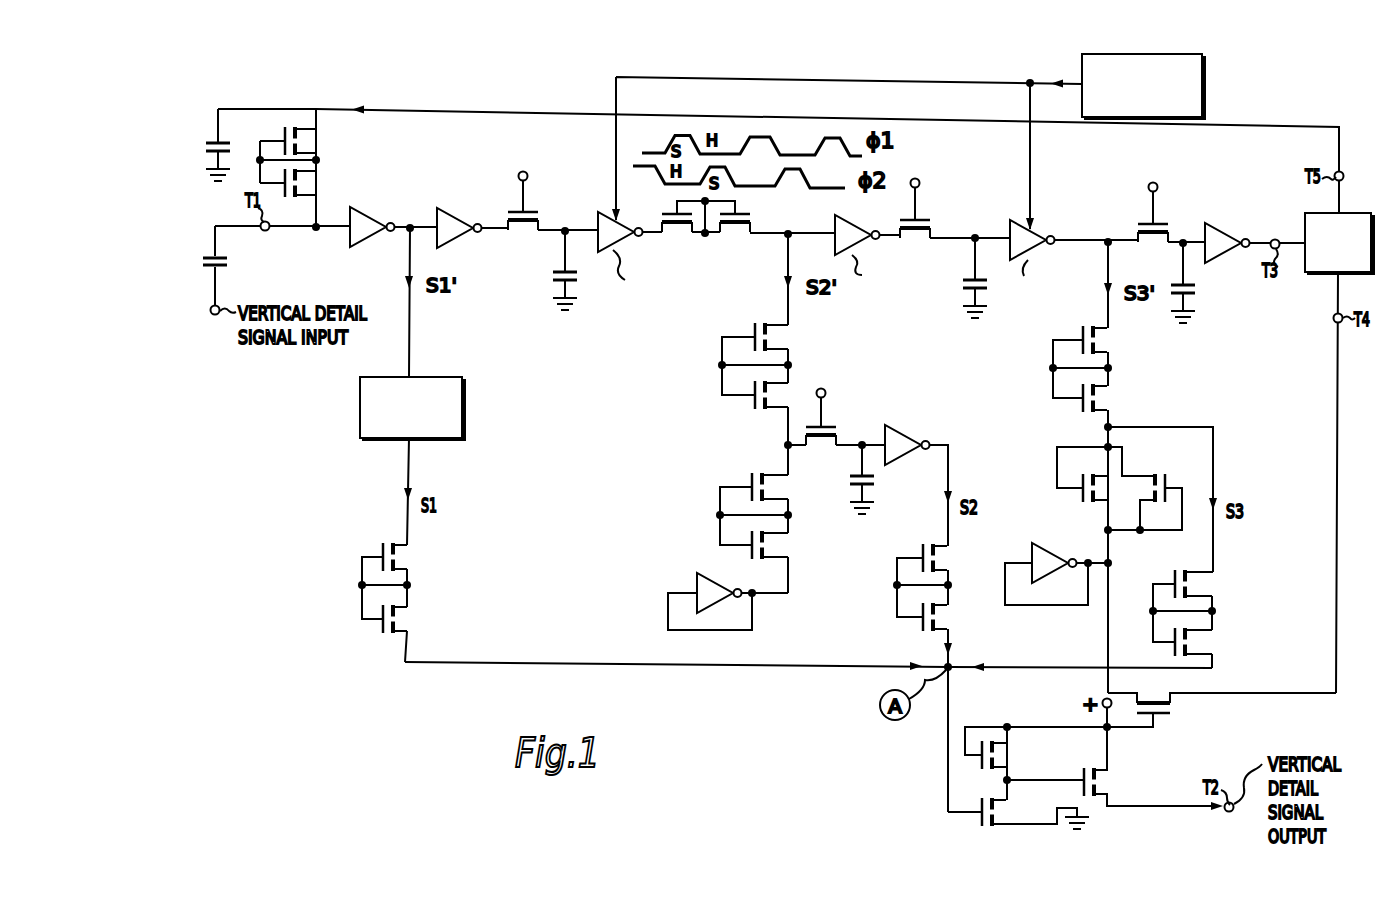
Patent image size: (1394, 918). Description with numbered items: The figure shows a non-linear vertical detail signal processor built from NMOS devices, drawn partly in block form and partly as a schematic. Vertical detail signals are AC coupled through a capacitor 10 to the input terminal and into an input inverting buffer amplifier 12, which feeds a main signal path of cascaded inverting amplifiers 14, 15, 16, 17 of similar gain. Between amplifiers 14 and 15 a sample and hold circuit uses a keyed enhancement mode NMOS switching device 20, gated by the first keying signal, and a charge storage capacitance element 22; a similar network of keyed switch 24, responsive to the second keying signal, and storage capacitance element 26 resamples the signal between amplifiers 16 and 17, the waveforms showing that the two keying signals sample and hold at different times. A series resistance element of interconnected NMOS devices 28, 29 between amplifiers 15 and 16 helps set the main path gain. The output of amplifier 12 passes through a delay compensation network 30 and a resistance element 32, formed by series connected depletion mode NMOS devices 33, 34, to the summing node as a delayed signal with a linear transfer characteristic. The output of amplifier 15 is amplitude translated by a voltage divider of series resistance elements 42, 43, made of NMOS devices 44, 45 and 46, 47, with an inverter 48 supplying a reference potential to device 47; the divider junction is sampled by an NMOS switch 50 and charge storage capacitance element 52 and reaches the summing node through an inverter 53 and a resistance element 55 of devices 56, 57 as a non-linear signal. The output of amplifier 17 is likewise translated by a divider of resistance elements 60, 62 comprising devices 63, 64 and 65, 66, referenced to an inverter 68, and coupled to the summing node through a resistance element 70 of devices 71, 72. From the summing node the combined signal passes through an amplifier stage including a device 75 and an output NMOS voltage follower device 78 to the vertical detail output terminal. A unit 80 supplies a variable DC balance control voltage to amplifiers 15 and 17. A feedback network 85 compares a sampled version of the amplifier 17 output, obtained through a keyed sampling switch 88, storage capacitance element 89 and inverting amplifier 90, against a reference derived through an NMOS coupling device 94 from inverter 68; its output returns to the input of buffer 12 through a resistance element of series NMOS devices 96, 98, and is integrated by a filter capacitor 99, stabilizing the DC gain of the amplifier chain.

The capacitor 10 is at (232, 264).
The input inverting buffer amplifier 12 is at (355, 208).
The inverting amplifier 14 is at (451, 207).
The inverting amplifier 15 is at (599, 211).
The inverting amplifier 16 is at (858, 216).
The inverting amplifier 17 is at (1004, 222).
The keyed enhancement mode NMOS switching device 20 is at (533, 255).
The charge storage capacitance element 22 is at (542, 285).
The keyed switch 24 is at (924, 268).
The storage capacitance element 26 is at (963, 290).
The NMOS device 28 is at (686, 263).
The NMOS device 29 is at (746, 263).
The delay compensation network 30 is at (360, 420).
The resistance element 32 is at (385, 590).
The depletion mode NMOS device 33 is at (436, 573).
The depletion mode NMOS device 34 is at (436, 635).
The series resistance element 42 is at (751, 368).
The series resistance element 43 is at (750, 519).
The NMOS device 44 is at (817, 352).
The NMOS device 45 is at (807, 411).
The NMOS device 46 is at (814, 502).
The NMOS device 47 is at (814, 562).
The inverter 48 is at (702, 588).
The NMOS switch 50 is at (827, 477).
The charge storage capacitance element 52 is at (874, 482).
The inverter 53 is at (908, 438).
The resistance element 55 is at (915, 589).
The NMOS device 56 is at (974, 570).
The NMOS device 57 is at (974, 633).
The series resistance element 60 is at (1079, 370).
The series resistance element 62 is at (1110, 488).
The NMOS device 63 is at (1136, 352).
The NMOS device 64 is at (1139, 412).
The NMOS device 65 is at (1125, 503).
The NMOS device 66 is at (1200, 482).
The inverter 68 is at (1046, 553).
The resistance element 70 is at (1184, 616).
The NMOS device 71 is at (1244, 591).
The NMOS device 72 is at (1244, 653).
The device 75 is at (1034, 821).
The output NMOS voltage follower device 78 is at (1134, 797).
The unit 80 is at (1203, 100).
The feedback network 85 is at (1305, 223).
The keyed sampling switch 88 is at (1162, 271).
The storage capacitance element 89 is at (1178, 292).
The inverting amplifier 90 is at (1226, 258).
The NMOS coupling device 94 is at (1221, 696).
The NMOS device 96 is at (343, 198).
The NMOS device 98 is at (343, 153).
The filter capacitor 99 is at (210, 145).